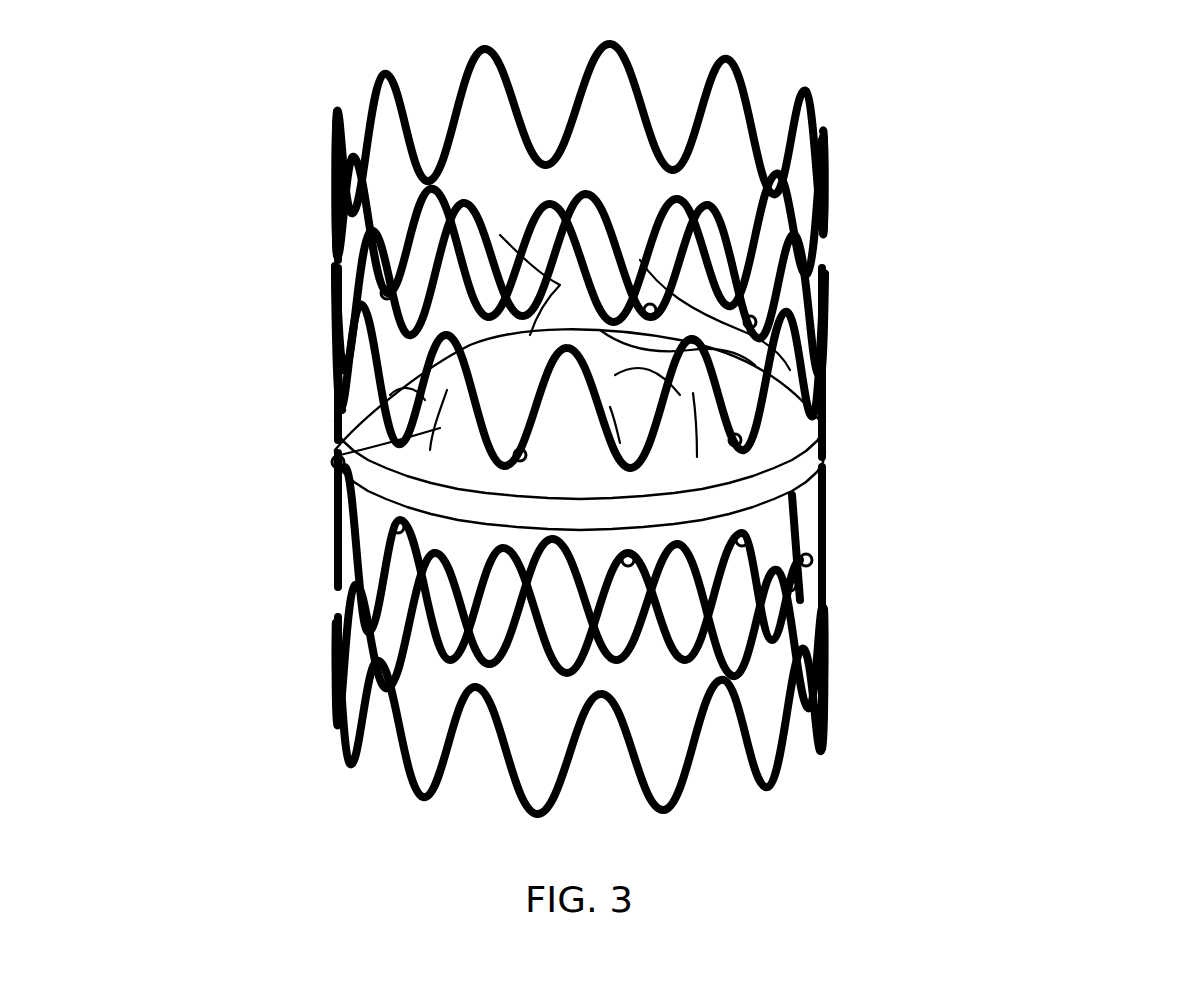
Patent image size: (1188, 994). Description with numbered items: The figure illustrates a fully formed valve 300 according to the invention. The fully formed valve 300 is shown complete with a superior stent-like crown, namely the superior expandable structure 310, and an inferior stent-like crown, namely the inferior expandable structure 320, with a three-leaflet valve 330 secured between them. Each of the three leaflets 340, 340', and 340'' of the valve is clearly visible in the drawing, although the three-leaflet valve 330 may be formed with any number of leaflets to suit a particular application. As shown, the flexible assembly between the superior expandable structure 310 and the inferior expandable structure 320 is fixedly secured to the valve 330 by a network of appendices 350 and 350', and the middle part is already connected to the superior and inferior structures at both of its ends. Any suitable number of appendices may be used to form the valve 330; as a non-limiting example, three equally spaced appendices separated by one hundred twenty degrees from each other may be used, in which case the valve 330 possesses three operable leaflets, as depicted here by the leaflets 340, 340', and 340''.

The fully formed valve 300 is at (1045, 507).
The superior expandable structure 310 is at (827, 187).
The inferior expandable structure 320 is at (340, 603).
The three-leaflet valve 330 is at (825, 433).
The leaflet 340 is at (686, 293).
The leaflet 340' is at (303, 415).
The leaflet 340'' is at (361, 236).
The appendix 350 is at (903, 554).
The appendix 350' is at (201, 485).